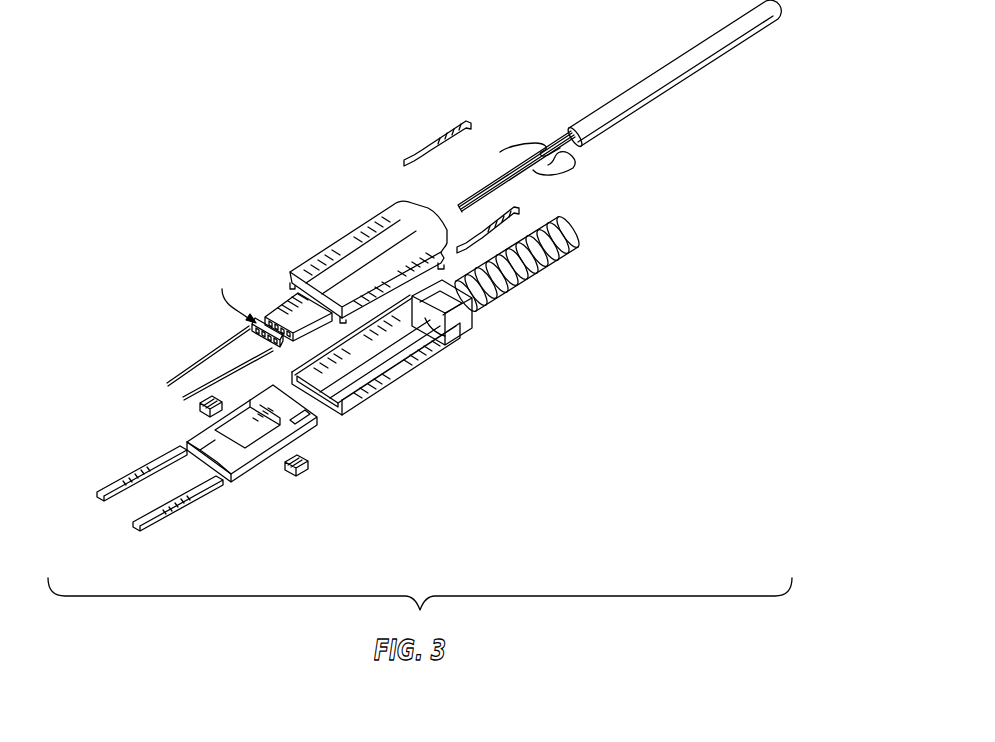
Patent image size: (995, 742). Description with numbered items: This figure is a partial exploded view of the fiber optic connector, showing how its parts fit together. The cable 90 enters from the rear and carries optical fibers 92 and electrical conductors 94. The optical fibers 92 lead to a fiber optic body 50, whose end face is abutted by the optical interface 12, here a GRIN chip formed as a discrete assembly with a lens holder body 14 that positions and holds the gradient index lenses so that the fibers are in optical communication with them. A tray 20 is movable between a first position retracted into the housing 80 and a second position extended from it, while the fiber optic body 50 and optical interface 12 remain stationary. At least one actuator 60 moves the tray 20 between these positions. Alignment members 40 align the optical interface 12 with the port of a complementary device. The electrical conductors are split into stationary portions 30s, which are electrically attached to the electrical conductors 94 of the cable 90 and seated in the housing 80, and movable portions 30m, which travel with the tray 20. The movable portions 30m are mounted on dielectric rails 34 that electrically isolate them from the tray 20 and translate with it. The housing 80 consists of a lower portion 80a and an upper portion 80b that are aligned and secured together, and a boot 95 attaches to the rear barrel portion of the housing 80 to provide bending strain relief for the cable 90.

The optical interface 12 is at (233, 291).
The lens holder body 14 is at (283, 347).
The tray 20 is at (247, 470).
The movable portion of electrical conductors 30m is at (147, 497).
The stationary portion of electrical conductors 30s is at (442, 135).
The rail 34 is at (115, 492).
The alignment member 40 is at (200, 387).
The fiber optic body 50 is at (283, 298).
The actuator 60 is at (197, 412).
The housing 80 is at (420, 308).
The lower portion of housing 80a is at (410, 368).
The upper portion of housing 80b is at (405, 282).
The cable 90 is at (667, 85).
The optical fibers 92 is at (495, 182).
The electrical conductors of cable 94 is at (517, 143).
The boot 95 is at (578, 240).